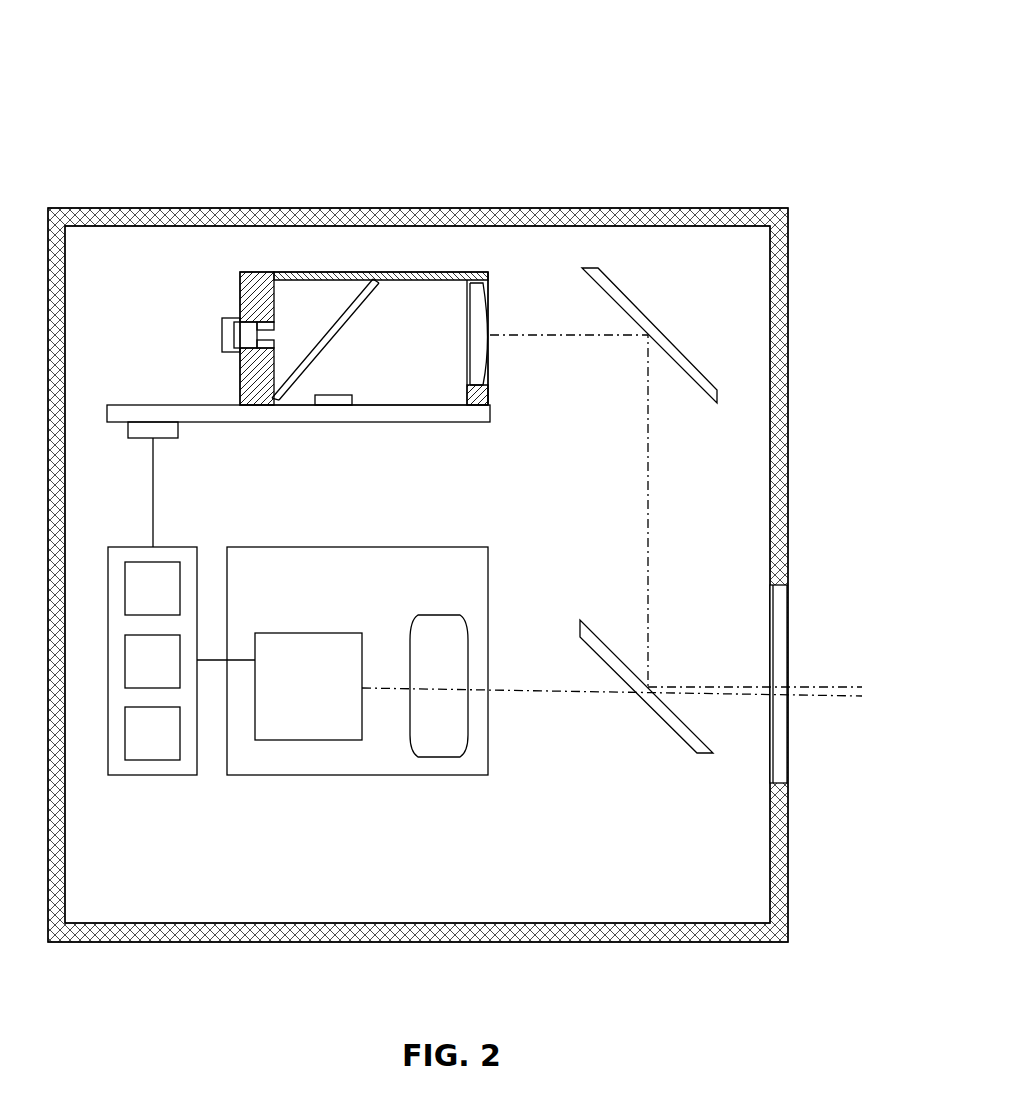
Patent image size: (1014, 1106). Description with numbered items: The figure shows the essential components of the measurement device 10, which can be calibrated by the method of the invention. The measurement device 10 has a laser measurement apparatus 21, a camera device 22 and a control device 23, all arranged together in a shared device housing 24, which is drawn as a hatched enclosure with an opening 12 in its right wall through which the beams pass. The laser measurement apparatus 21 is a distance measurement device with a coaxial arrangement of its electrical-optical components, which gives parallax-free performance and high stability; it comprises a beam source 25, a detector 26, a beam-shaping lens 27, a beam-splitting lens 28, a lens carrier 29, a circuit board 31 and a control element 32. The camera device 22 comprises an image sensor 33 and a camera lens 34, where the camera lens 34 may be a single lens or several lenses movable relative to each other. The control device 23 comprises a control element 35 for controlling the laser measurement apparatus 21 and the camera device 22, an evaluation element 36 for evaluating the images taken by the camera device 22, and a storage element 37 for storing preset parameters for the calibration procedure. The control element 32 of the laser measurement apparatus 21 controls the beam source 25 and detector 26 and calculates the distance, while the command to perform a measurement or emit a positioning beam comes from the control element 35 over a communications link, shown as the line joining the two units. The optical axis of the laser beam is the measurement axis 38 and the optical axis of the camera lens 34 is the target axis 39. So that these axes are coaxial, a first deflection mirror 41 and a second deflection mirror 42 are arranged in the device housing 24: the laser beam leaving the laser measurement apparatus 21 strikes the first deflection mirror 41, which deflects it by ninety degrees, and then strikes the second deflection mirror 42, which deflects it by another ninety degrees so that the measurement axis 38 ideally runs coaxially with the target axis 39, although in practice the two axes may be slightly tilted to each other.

The measurement device 10 is at (468, 118).
The window 12 is at (775, 632).
The laser measurement apparatus 21 is at (182, 298).
The camera device 22 is at (344, 776).
The control device 23 is at (152, 776).
The device housing 24 is at (281, 212).
The beam source 25 is at (222, 338).
The detector 26 is at (335, 405).
The beam-shaping lens 27 is at (480, 405).
The beam-splitting lens 28 is at (322, 336).
The lens carrier 29 is at (251, 408).
The circuit board 31 is at (411, 422).
The control element 32 is at (141, 438).
The image sensor 33 is at (307, 650).
The camera lens 34 is at (440, 640).
The control element 35 is at (152, 588).
The evaluation element 36 is at (152, 661).
The storage element 37 is at (152, 733).
The measurement axis 38 is at (559, 340).
The target axis 39 is at (568, 700).
The first deflection mirror 41 is at (640, 310).
The second deflection mirror 42 is at (698, 737).